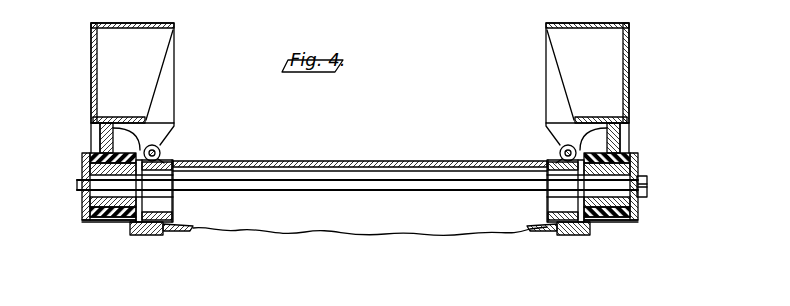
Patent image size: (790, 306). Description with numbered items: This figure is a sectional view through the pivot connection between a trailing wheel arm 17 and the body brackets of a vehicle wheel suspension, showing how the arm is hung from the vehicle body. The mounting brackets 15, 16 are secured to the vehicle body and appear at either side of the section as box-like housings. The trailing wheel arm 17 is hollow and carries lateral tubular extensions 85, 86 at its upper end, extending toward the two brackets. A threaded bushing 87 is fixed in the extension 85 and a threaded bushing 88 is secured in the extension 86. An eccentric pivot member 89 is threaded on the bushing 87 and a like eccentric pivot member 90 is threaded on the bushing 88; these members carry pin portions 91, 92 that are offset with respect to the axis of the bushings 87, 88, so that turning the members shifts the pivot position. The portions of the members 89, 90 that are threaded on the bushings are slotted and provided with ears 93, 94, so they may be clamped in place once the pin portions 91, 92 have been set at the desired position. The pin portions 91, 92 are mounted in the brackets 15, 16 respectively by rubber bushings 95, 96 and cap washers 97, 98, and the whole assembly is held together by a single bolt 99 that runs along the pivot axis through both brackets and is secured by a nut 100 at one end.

The mounting bracket 15 is at (168, 78).
The mounting bracket 16 is at (553, 83).
The trailing wheel arm 17 is at (336, 161).
The lateral tubular extension 85 is at (182, 228).
The lateral tubular extension 86 is at (535, 226).
The threaded bushing 87 is at (167, 208).
The threaded bushing 88 is at (548, 201).
The eccentric pivot member 89 is at (137, 233).
The eccentric pivot member 90 is at (582, 234).
The pin portion 91 is at (95, 200).
The pin portion 92 is at (630, 207).
The ears 93 is at (162, 152).
The ears 94 is at (558, 151).
The rubber bushing 95 is at (90, 228).
The rubber bushing 96 is at (630, 222).
The cap washer 97 is at (85, 163).
The cap washer 98 is at (637, 159).
The bolt 99 is at (360, 190).
The nut 100 is at (634, 190).